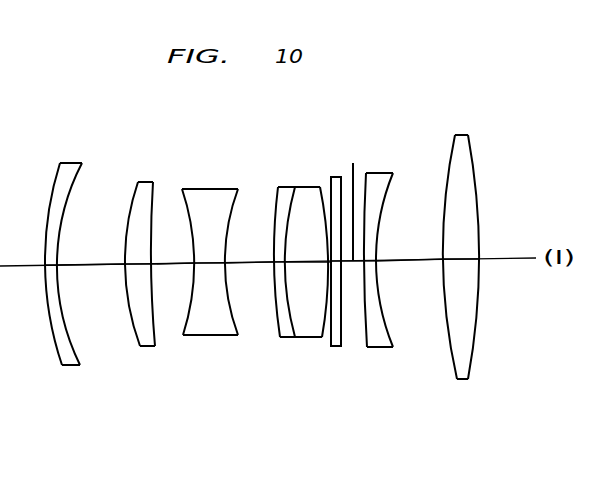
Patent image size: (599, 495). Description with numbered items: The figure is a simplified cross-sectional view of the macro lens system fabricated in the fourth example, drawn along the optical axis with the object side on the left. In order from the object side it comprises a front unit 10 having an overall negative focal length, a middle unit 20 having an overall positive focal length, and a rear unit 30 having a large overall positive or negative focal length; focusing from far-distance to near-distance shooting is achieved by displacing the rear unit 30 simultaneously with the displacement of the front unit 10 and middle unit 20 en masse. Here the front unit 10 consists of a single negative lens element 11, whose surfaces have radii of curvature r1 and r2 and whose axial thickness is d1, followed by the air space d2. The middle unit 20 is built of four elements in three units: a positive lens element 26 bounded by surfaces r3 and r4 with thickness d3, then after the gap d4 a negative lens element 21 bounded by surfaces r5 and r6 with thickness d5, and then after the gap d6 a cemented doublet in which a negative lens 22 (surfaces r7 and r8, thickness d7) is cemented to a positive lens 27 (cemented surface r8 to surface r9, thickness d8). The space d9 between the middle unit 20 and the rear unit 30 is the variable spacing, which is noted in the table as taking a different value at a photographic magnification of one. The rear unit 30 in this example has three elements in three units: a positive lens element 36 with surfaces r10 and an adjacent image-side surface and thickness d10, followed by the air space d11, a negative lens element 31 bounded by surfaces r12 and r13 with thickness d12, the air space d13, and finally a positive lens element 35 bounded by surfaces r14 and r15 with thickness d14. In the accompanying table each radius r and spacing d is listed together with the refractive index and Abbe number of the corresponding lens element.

The front unit 10 is at (85, 413).
The middle unit 20 is at (323, 412).
The rear unit 30 is at (487, 409).
The negative lens element 11 is at (65, 263).
The positive lens element 26 is at (134, 248).
The negative lens element 21 is at (213, 249).
The negative lens 22 is at (280, 258).
The positive lens 27 is at (307, 237).
The positive lens element 36 is at (337, 240).
The negative lens element 31 is at (397, 239).
The positive lens element 35 is at (462, 248).
The radius of curvature of lens plane 1 r1 is at (60, 163).
The radius of curvature of lens plane 2 r2 is at (74, 244).
The radius of curvature of lens plane 3 r3 is at (138, 182).
The radius of curvature of lens plane 4 r4 is at (147, 231).
The radius of curvature of lens plane 5 r5 is at (182, 189).
The radius of curvature of lens plane 6 r6 is at (234, 238).
The radius of curvature of lens plane 7 r7 is at (278, 187).
The radius of curvature of lens plane 8 r8 is at (295, 238).
The radius of curvature of lens plane 9 r9 is at (307, 217).
The radius of curvature of lens plane 10 r10 is at (331, 220).
The radius of curvature of lens plane 12 r12 is at (367, 173).
The radius of curvature of lens plane 13 r13 is at (380, 365).
The radius of curvature of lens plane 14 r14 is at (456, 135).
The radius of curvature of lens plane 15 r15 is at (450, 394).
The distance between plane 1 and plane 2 d1 is at (50, 265).
The distance between plane 2 and plane 3 d2 is at (89, 265).
The distance between plane 3 and plane 4 d3 is at (130, 264).
The distance between plane 4 and plane 5 d4 is at (173, 263).
The distance between plane 5 and plane 6 d5 is at (204, 263).
The distance between plane 6 and plane 7 d6 is at (248, 263).
The distance between plane 7 and plane 8 d7 is at (281, 262).
The distance between plane 8 and plane 9 d8 is at (305, 262).
The distance between plane 9 and plane 10 d9 is at (330, 262).
The distance between plane 10 and plane 11 d10 is at (342, 261).
The distance between plane 11 and plane 12 d11 is at (362, 265).
The distance between plane 12 and plane 13 d12 is at (373, 261).
The distance between plane 13 and plane 14 d13 is at (408, 261).
The distance between plane 14 and plane 15 d14 is at (458, 260).